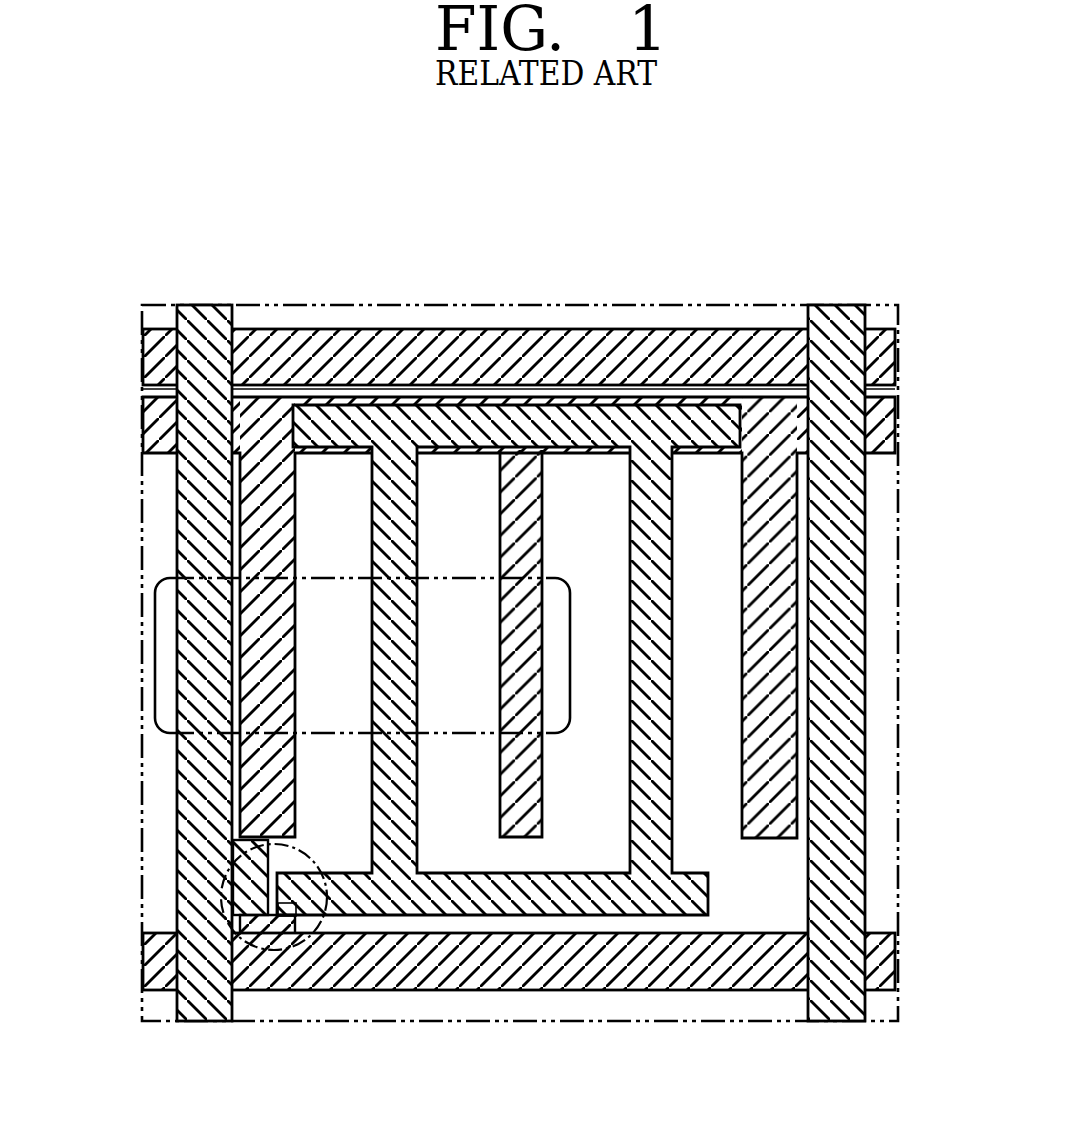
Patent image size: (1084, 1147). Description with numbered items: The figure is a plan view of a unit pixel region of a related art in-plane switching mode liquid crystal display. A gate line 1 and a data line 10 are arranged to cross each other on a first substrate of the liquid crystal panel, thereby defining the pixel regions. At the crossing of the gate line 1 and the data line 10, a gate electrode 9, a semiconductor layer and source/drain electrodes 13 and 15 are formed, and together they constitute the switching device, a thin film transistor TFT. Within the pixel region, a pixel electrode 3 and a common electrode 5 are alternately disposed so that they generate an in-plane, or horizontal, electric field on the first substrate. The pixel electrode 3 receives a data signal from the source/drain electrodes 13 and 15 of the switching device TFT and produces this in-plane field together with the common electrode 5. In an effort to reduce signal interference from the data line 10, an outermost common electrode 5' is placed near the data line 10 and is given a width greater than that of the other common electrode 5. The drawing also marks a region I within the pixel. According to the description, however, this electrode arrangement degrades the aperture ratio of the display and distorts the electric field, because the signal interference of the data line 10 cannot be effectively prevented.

The gate line 1 is at (898, 360).
The pixel electrode 3 is at (398, 478).
The common electrode 5 is at (521, 531).
The outermost common electrode 5' is at (519, 531).
The gate electrode 9 is at (265, 848).
The data line 10 is at (204, 320).
The source/drain electrode 13 is at (248, 918).
The source/drain electrode 15 is at (290, 918).
The thin film transistor TFT is at (207, 902).
The region I is at (151, 652).